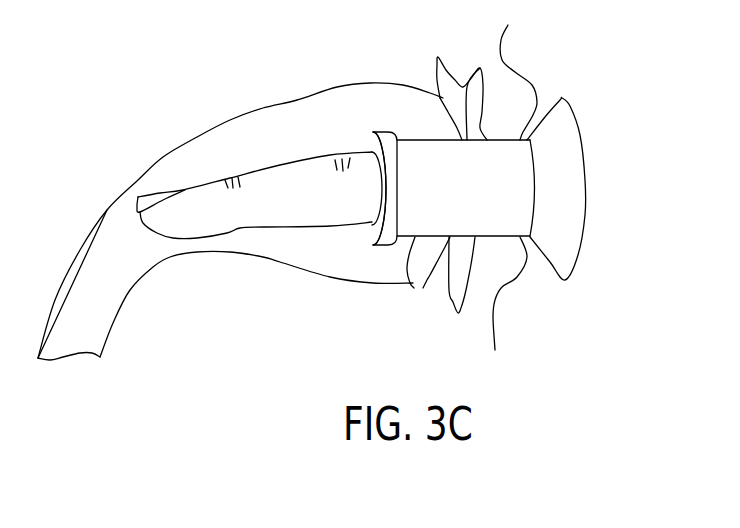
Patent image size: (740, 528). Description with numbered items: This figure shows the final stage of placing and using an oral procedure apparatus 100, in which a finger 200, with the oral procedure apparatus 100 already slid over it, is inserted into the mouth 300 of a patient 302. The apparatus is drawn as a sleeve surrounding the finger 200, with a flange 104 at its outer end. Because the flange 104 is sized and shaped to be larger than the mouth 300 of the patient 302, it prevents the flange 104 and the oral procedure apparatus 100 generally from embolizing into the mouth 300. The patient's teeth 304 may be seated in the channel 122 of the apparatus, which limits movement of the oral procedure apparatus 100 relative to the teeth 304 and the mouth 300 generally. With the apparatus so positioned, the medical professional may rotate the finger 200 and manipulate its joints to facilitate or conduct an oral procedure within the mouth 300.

The oral procedure apparatus 100 is at (567, 138).
The flange 104 is at (560, 110).
The channel 122 is at (407, 107).
The finger 200 is at (240, 177).
The mouth 300 is at (322, 92).
The patient 302 is at (536, 68).
The teeth 304 is at (433, 282).